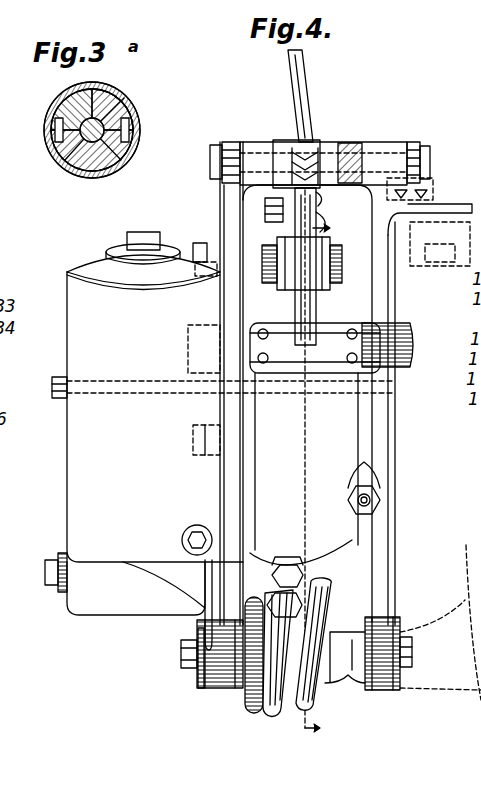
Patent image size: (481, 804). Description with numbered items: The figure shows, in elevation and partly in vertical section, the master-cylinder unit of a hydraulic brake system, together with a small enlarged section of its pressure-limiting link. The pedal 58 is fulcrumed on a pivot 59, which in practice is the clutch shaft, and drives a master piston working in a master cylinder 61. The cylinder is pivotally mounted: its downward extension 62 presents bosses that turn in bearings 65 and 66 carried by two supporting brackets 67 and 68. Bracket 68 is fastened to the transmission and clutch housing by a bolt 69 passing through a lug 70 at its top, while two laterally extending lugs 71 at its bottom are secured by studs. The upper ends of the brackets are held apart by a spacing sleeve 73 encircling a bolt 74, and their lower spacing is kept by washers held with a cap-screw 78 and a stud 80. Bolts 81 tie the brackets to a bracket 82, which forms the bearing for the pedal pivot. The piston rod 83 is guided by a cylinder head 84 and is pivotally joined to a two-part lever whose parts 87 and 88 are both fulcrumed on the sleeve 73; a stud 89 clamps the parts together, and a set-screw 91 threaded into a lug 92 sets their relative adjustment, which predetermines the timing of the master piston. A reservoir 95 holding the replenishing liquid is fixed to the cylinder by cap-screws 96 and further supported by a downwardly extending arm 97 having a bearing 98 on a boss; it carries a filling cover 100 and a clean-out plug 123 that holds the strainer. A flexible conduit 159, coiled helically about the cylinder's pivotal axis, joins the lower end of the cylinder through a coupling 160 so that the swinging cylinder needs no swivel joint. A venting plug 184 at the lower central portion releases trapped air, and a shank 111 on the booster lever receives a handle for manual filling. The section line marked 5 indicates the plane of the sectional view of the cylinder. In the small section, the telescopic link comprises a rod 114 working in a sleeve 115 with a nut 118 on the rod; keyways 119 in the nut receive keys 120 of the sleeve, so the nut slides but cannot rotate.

In FIG. 3A, the rod 114 is at (118, 98).
In FIG. 3A, the sleeve 115 is at (62, 100).
In FIG. 3A, the nut 118 is at (92, 178).
In FIG. 3A, the keyways 119 is at (60, 160).
In FIG. 3A, the keys 120 is at (56, 125).
In FIG. 4, the pedal 58 is at (306, 80).
In FIG. 4, the bolt 74 is at (216, 143).
In FIG. 4, the set-screw 91 is at (302, 152).
In FIG. 4, the spacing sleeve 73 is at (352, 147).
In FIG. 4, the bolt 69 is at (440, 180).
In FIG. 4, the lug 70 is at (434, 226).
In FIG. 4, the bracket 67 is at (222, 195).
In FIG. 4, the stud 89 is at (262, 204).
In FIG. 4, the lug 92 is at (320, 196).
In FIG. 4, the lever part 87 is at (322, 222).
In FIG. 4, the lever part 88 is at (282, 233).
In FIG. 4, the section line 5- 5 is at (324, 484).
In FIG. 4, the filling cover 100 is at (134, 242).
In FIG. 4, the bolts 81 is at (207, 246).
In FIG. 4, the piston rod 83 is at (318, 305).
In FIG. 4, the pivot 59 is at (402, 331).
In FIG. 4, the bracket 82 is at (222, 313).
In FIG. 4, the cylinder head 84 is at (330, 355).
In FIG. 4, the cap-screws 96 is at (57, 398).
In FIG. 4, the reservoir 95 is at (76, 463).
In FIG. 4, the master cylinder 61 is at (352, 435).
In FIG. 4, the venting plug 184 is at (366, 500).
In FIG. 4, the bracket 68 is at (382, 532).
In FIG. 4, the clean-out plug 123 is at (50, 560).
In FIG. 4, the coupling 160 is at (292, 568).
In FIG. 4, the downward extension 62 is at (348, 575).
In FIG. 4, the shank 111 is at (326, 605).
In FIG. 4, the lugs 71 is at (410, 612).
In FIG. 4, the arm 97 is at (200, 612).
In FIG. 4, the cap-screw 78 is at (183, 652).
In FIG. 4, the stud 80 is at (414, 650).
In FIG. 4, the bearing 98 is at (199, 685).
In FIG. 4, the bearing 65 is at (225, 688).
In FIG. 4, the bearing 66 is at (385, 690).
In FIG. 4, the flexible conduit 159 is at (268, 710).